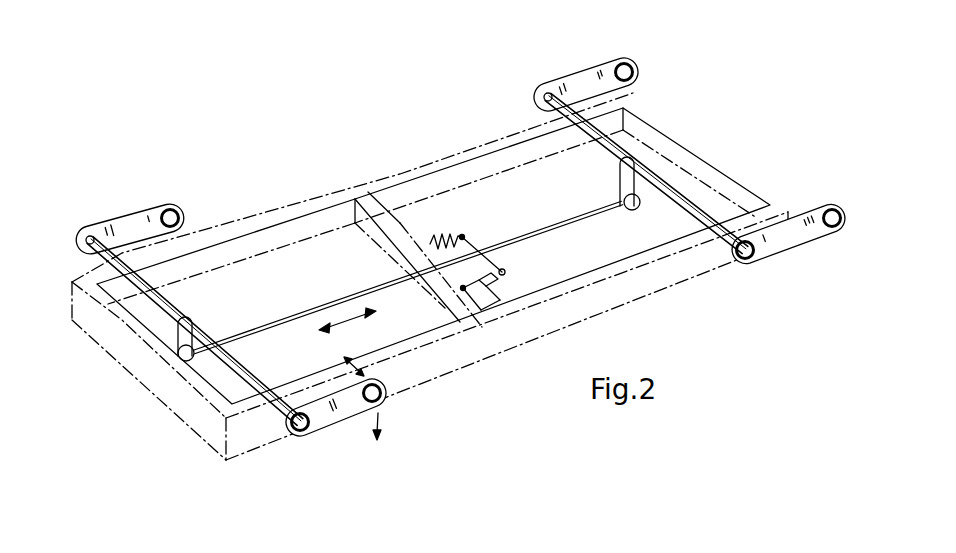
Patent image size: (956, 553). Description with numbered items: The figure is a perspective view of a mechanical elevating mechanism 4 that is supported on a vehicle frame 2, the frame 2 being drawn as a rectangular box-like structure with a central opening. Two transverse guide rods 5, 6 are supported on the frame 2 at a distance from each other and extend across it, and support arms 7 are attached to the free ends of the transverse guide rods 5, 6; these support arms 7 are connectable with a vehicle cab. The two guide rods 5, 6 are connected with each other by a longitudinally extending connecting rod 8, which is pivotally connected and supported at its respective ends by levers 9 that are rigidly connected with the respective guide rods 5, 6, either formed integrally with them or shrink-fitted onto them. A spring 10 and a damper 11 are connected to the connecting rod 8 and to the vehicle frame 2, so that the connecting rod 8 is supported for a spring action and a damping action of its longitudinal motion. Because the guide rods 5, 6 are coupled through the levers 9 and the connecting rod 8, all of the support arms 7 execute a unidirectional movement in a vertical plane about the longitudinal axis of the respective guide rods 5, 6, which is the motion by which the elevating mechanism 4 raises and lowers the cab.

The frame 2 is at (332, 197).
The elevating mechanism 4 is at (437, 147).
The transverse guide rod 5 is at (174, 312).
The transverse guide rod 6 is at (600, 152).
The support arm 7 is at (580, 77).
The connecting rod 8 is at (328, 306).
The lever 9 is at (187, 343).
The spring 10 is at (442, 232).
The damper 11 is at (496, 285).